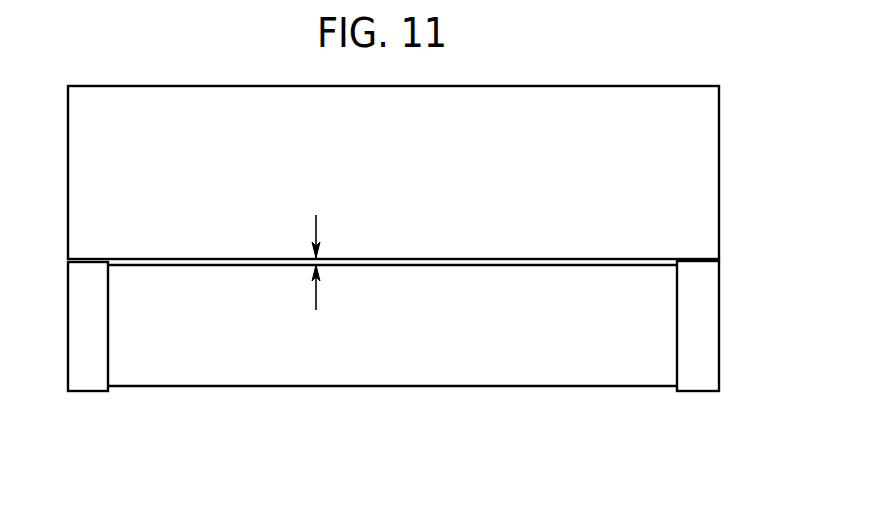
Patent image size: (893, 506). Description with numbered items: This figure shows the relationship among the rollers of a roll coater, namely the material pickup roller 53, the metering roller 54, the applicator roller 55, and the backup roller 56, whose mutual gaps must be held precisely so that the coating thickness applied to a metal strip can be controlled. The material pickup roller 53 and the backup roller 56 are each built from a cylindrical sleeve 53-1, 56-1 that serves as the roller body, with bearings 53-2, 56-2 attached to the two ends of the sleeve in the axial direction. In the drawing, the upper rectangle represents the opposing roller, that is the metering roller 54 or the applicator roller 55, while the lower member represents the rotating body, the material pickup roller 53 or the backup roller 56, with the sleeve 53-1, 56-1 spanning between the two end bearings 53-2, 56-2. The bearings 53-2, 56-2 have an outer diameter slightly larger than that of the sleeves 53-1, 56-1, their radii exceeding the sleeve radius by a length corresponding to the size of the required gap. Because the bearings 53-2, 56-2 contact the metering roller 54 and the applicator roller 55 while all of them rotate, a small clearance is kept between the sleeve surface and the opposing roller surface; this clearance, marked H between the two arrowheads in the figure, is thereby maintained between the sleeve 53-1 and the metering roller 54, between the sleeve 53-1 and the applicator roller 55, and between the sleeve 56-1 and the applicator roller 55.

The metering roller 54 is at (440, 172).
The applicator roller 55 is at (712, 168).
The material pickup roller 53 is at (423, 368).
The backup roller 56 is at (423, 368).
The sleeve 53-1 is at (392, 370).
The sleeve 56-1 is at (481, 377).
The bearings 53-2 is at (400, 368).
The bearings 56-2 is at (88, 383).
The gap height H is at (317, 295).